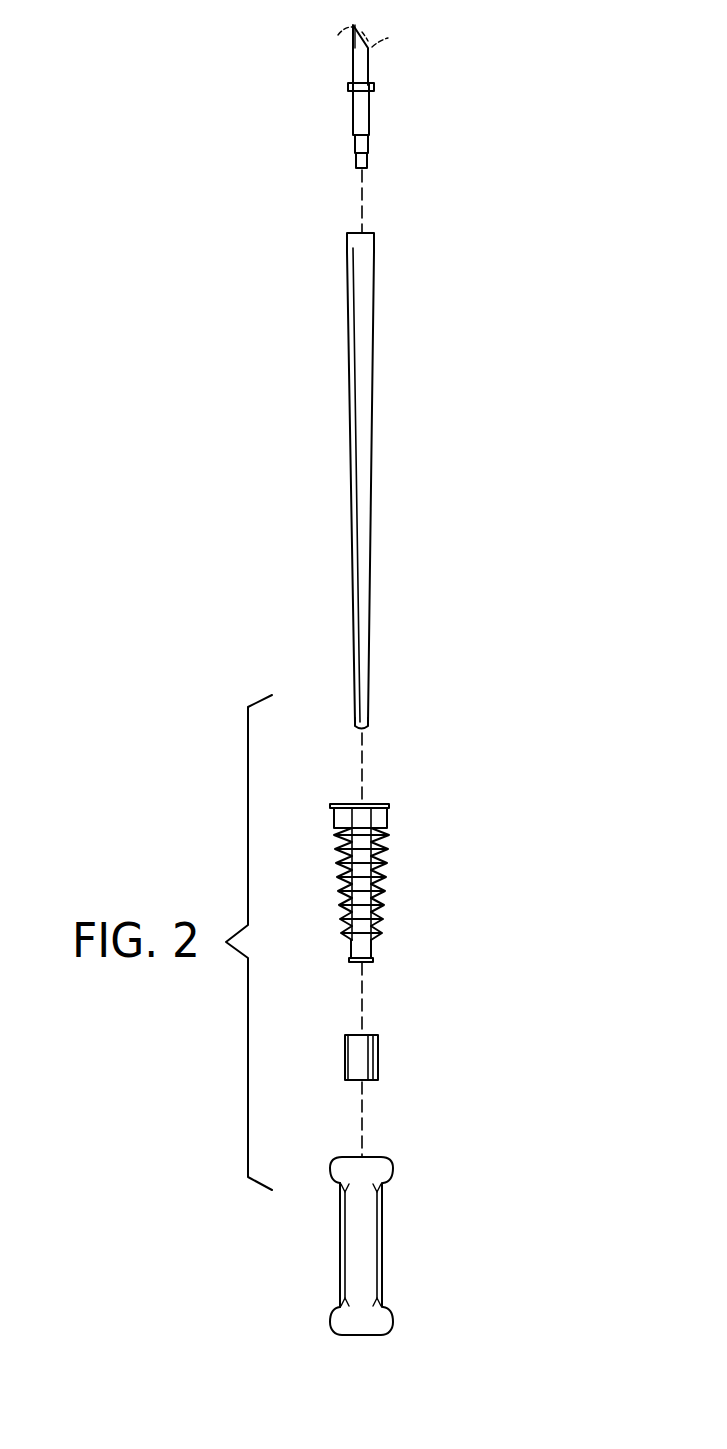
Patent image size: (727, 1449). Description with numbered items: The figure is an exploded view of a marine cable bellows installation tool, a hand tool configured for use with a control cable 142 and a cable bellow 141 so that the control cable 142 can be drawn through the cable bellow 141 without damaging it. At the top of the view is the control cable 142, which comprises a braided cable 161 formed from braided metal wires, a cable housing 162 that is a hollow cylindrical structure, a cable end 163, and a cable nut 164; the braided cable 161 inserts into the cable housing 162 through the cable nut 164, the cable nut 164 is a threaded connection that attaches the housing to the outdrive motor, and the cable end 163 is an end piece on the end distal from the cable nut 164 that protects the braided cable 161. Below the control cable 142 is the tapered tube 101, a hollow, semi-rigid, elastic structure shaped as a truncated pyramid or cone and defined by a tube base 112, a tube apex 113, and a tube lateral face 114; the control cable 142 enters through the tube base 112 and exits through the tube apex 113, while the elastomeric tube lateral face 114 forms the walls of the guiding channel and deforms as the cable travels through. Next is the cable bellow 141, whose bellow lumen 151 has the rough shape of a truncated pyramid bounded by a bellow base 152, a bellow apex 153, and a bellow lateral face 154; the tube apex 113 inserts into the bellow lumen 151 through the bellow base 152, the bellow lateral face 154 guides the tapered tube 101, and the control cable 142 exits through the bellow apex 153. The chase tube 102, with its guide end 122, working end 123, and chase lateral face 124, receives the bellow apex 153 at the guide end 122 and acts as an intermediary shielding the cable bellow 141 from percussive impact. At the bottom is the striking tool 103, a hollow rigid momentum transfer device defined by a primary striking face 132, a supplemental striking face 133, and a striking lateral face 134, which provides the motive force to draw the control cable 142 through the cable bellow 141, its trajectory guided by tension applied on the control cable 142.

The tapered tube 101 is at (359, 457).
The chase tube 102 is at (401, 1064).
The striking tool 103 is at (380, 1254).
The tube base 112 is at (369, 231).
The tube apex 113 is at (366, 725).
The tube lateral face 114 is at (363, 520).
The guide end 122 is at (367, 1034).
The working end 123 is at (406, 1097).
The chase lateral face 124 is at (357, 1060).
The primary striking face 132 is at (380, 1172).
The supplemental striking face 133 is at (343, 1320).
The striking lateral face 134 is at (362, 1257).
The cable bellow 141 is at (397, 850).
The control cable 142 is at (325, 87).
The bellow lumen 151 is at (432, 774).
The bellow base 152 is at (372, 805).
The bellow apex 153 is at (365, 963).
The bellow lateral face 154 is at (340, 877).
The braided cable 161 is at (370, 62).
The cable housing 162 is at (370, 110).
The cable end 163 is at (418, 146).
The cable nut 164 is at (353, 70).